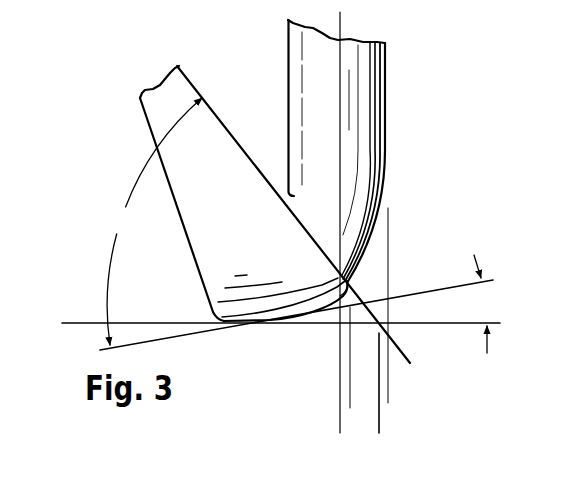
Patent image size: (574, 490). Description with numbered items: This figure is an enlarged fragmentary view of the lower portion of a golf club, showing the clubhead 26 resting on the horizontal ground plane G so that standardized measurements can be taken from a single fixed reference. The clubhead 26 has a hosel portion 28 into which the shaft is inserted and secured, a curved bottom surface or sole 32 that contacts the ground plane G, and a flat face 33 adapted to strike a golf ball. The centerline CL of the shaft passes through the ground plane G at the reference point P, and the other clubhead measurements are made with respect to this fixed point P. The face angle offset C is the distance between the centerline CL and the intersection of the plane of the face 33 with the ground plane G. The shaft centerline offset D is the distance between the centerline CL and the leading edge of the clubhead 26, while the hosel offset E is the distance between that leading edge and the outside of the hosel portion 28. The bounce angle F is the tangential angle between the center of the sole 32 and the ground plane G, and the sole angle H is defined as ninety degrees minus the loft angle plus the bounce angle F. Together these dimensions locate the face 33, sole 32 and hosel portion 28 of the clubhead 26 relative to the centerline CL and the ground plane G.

The clubhead 26 is at (157, 115).
The hosel portion 28 is at (362, 95).
The sole 32 is at (288, 323).
The face 33 is at (223, 118).
The centerline of the shaft CL is at (338, 32).
The sole angle H is at (154, 221).
The ground plane G is at (77, 327).
The bounce angle F is at (482, 304).
The reference point P is at (334, 328).
The shaft centerline offset D is at (373, 361).
The hosel offset E is at (423, 395).
The face angle offset C is at (420, 425).